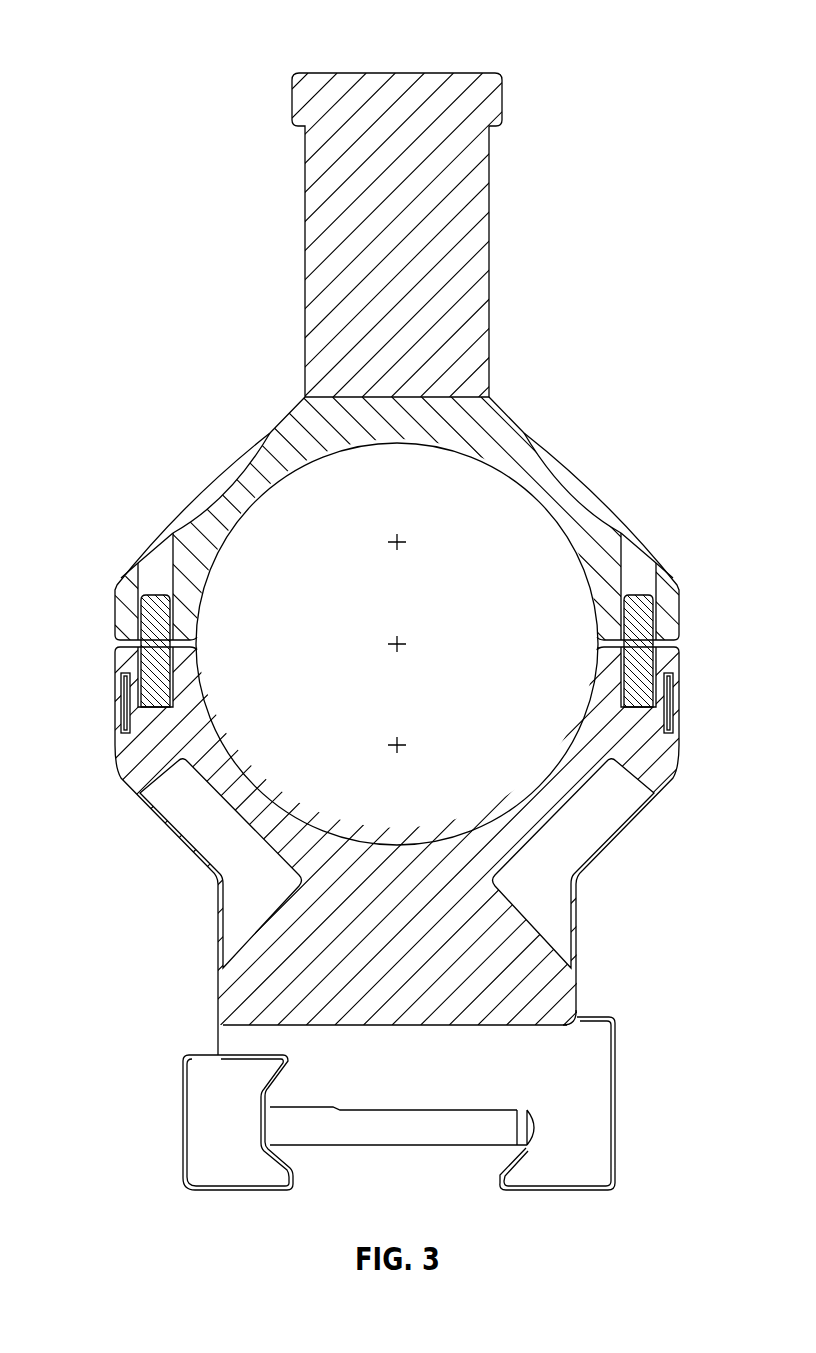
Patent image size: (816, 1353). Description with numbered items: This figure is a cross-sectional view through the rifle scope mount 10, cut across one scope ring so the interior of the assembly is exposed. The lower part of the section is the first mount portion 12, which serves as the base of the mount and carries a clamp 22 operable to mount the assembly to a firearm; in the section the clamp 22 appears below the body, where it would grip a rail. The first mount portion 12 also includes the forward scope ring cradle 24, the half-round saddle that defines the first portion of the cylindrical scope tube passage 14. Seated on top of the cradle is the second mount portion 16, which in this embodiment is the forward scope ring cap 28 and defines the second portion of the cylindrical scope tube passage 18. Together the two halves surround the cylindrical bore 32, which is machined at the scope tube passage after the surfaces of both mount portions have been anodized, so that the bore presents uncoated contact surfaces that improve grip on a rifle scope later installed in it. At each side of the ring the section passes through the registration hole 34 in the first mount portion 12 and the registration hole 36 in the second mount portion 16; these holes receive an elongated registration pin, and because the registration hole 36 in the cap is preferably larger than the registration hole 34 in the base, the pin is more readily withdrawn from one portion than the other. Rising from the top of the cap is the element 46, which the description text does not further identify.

The rifle scope mount 10 is at (213, 57).
The first mount portion 12 is at (217, 942).
The first portion of the cylindrical scope tube passage 14 is at (404, 744).
The second mount portion 16 is at (540, 436).
The second portion of the cylindrical scope tube passage 18 is at (404, 537).
The clamp 22 is at (614, 1120).
The forward scope ring cradle 24 is at (565, 1010).
The forward scope ring cap 28 is at (624, 510).
The cylindrical bore 32 is at (404, 640).
The registration hole 34 is at (131, 670).
The registration hole 36 is at (131, 620).
The post 46 is at (410, 72).